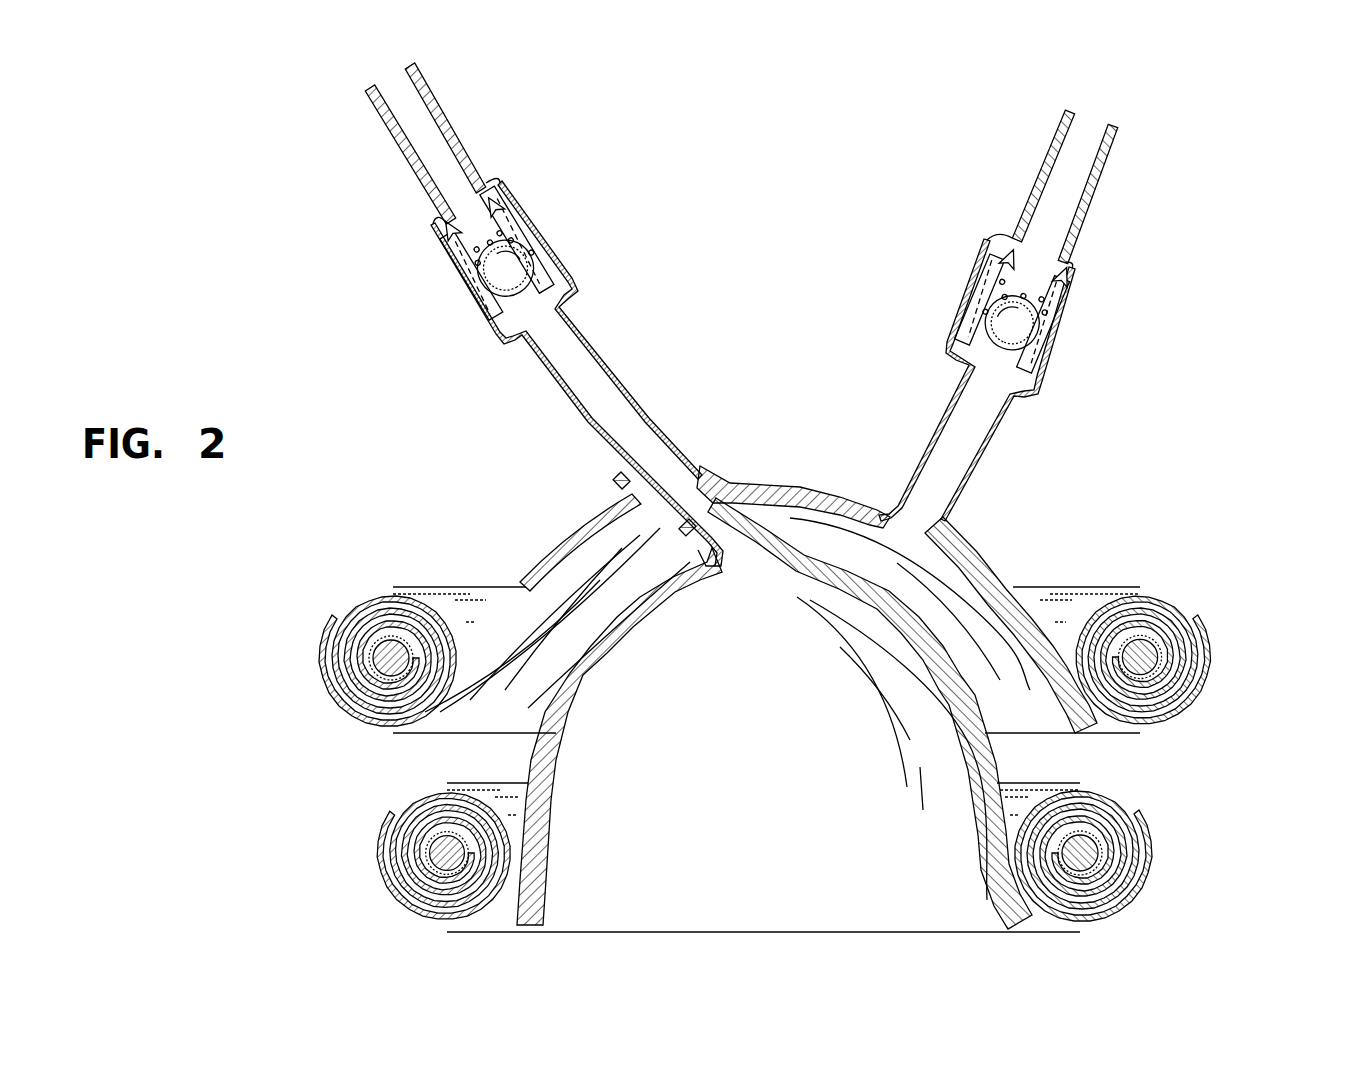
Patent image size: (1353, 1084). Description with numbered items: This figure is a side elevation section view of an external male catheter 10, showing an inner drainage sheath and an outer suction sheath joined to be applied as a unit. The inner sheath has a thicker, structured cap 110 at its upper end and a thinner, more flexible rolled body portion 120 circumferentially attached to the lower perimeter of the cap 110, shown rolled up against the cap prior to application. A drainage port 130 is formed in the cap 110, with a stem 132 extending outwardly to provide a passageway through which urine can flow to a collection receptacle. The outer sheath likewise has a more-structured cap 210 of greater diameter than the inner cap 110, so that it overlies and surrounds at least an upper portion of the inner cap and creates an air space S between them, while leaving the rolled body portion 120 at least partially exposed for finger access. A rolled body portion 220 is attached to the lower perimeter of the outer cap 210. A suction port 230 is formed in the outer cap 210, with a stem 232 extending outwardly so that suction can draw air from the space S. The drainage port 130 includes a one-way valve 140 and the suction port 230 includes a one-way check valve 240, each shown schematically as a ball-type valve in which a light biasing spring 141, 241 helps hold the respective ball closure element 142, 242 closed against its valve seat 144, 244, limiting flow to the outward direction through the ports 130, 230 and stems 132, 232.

The external male catheter 10 is at (1024, 516).
The cap 110 is at (598, 627).
The rolled body portion 120 is at (1150, 880).
The drainage port 130 is at (762, 567).
The stem 132 is at (660, 433).
The one-way valve 140 is at (548, 232).
The spring 141 is at (440, 260).
The ball valve 142 is at (518, 262).
The valve seat 144 is at (535, 267).
The cap 210 is at (590, 527).
The rolled body portion 220 is at (1215, 660).
The suction port 230 is at (912, 527).
The stem 232 is at (985, 455).
The one-way check valve 240 is at (1077, 330).
The spring 241 is at (1090, 302).
The ball valve 242 is at (983, 327).
The valve seat 244 is at (1013, 320).
The space S is at (970, 603).